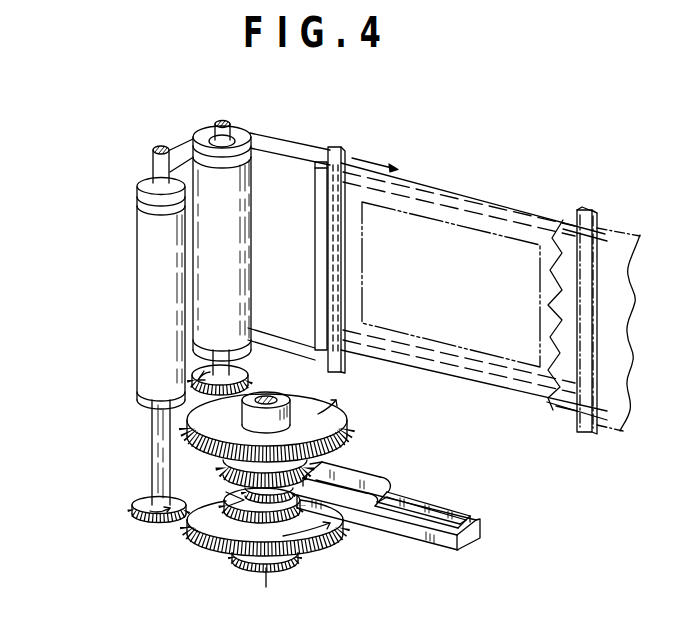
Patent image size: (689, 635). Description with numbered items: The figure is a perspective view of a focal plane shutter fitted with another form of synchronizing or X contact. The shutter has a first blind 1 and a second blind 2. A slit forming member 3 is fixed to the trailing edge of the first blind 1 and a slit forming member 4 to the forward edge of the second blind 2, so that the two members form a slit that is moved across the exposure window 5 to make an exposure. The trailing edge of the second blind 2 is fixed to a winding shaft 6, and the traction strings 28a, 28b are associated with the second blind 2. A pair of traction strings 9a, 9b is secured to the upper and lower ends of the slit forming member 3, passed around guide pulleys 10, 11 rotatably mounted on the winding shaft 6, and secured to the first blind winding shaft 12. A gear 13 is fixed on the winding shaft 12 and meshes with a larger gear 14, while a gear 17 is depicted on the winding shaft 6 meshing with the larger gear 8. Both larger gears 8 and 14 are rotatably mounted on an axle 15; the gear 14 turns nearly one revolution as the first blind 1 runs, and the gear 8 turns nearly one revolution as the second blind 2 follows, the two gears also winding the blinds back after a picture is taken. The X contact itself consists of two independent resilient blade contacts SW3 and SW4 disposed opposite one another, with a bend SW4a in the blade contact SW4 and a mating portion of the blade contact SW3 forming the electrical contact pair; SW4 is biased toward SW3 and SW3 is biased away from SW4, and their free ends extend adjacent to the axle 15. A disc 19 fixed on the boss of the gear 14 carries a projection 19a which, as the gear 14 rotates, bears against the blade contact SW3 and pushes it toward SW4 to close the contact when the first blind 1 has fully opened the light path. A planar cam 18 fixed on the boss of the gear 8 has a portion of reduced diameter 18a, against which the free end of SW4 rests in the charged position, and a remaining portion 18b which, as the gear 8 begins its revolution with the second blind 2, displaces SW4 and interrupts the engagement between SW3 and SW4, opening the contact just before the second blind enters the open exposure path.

The first blind 1 is at (447, 215).
The second blind 2 is at (317, 166).
The slit forming member 3 is at (346, 152).
The slit forming member 4 is at (334, 151).
The exposure window 5 is at (498, 247).
The winding shaft 6 is at (233, 125).
The traction string 9a is at (300, 172).
The traction string 9b is at (275, 350).
The guide pulley 10 is at (207, 133).
The guide pulley 11 is at (210, 345).
The first blind winding shaft 12 is at (153, 173).
The gear 13 is at (140, 505).
The gear 14 is at (332, 543).
The axle 15 is at (288, 393).
The gear 17 is at (242, 366).
The gear 8 is at (343, 427).
The cam 18 is at (233, 464).
The portion of reduced diameter 18a is at (323, 465).
The remaining portion of the cam 18b is at (230, 473).
The disc 19 is at (257, 510).
The projection 19a is at (193, 530).
The traction string 28a is at (570, 222).
The traction string 28b is at (567, 405).
The movable blade contact SW3 is at (445, 548).
The movable blade contact SW4 is at (466, 515).
The bend SW4a is at (382, 477).